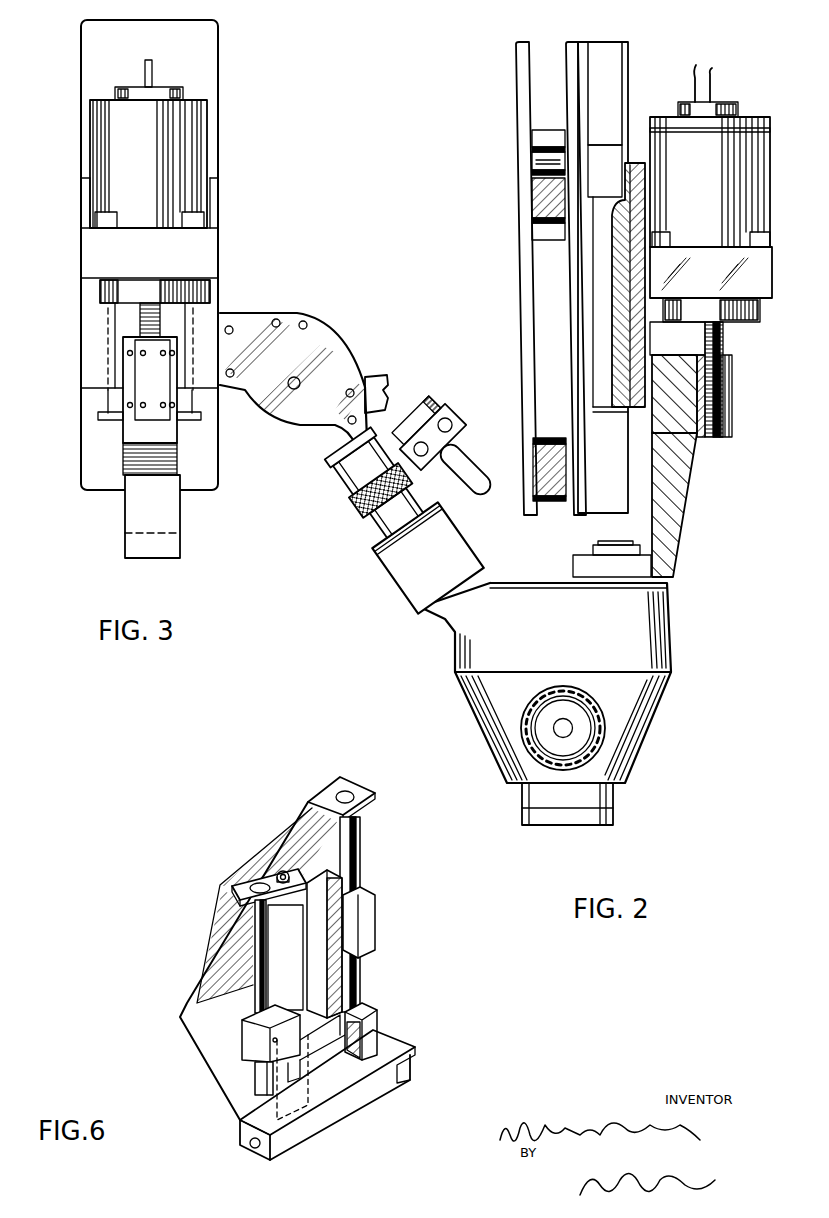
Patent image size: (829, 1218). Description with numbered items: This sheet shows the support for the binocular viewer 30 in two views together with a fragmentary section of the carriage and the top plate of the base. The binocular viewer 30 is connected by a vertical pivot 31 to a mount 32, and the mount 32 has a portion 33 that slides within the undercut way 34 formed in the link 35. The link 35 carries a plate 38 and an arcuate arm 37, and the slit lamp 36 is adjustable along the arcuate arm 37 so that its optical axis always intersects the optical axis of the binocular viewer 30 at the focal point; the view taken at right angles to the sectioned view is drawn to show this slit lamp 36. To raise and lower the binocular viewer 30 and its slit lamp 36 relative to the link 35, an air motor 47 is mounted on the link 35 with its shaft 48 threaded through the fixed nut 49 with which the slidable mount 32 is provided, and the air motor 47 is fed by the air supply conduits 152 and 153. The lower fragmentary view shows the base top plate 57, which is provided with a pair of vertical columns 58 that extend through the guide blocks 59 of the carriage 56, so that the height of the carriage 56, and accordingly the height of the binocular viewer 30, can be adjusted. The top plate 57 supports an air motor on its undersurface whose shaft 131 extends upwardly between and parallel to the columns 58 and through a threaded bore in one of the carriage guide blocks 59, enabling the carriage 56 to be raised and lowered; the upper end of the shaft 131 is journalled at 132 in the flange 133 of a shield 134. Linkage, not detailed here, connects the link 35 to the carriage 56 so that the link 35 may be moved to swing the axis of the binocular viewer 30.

In FIG. 2, the binocular viewer 30 is at (462, 715).
In FIG. 2, the vertical pivot 31 is at (595, 545).
In FIG. 3, the mount 32 is at (128, 512).
In FIG. 2, the mount 32 is at (682, 505).
In FIG. 3, the portion of the mount 33 is at (125, 335).
In FIG. 2, the portion of the mount 33 is at (640, 338).
In FIG. 3, the undercut way 34 is at (108, 312).
In FIG. 2, the undercut way 34 is at (628, 185).
In FIG. 3, the link 35 is at (82, 205).
In FIG. 2, the link 35 is at (518, 268).
In FIG. 3, the slit lamp 36 is at (433, 388).
In FIG. 3, the arcuate arm 37 is at (378, 375).
In FIG. 3, the plate 38 is at (298, 313).
In FIG. 2, the air motor 47 is at (658, 117).
In FIG. 2, the shaft 48 is at (723, 343).
In FIG. 2, the fixed nut 49 is at (732, 430).
In FIG. 6, the carriage 56 is at (320, 970).
In FIG. 6, the plate 57 is at (250, 1050).
In FIG. 6, the vertical columns 58 is at (360, 845).
In FIG. 6, the guide blocks 59 is at (370, 915).
In FIG. 6, the shaft 131 is at (290, 1075).
In FIG. 6, the journal 132 is at (280, 872).
In FIG. 6, the flange 133 is at (232, 888).
In FIG. 6, the shield 134 is at (205, 968).
In FIG. 2, the air supply conduit 152 is at (696, 65).
In FIG. 2, the air supply conduit 153 is at (712, 82).